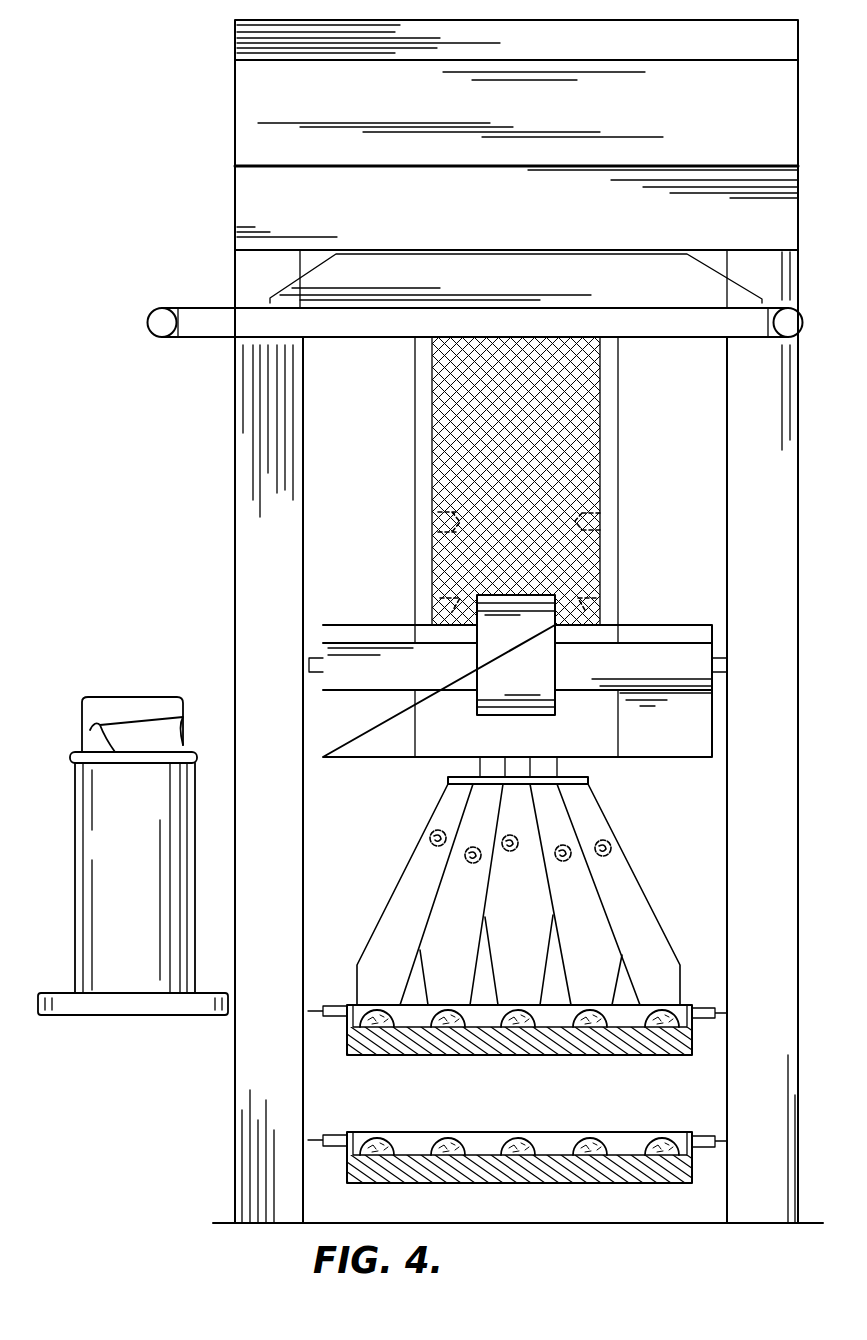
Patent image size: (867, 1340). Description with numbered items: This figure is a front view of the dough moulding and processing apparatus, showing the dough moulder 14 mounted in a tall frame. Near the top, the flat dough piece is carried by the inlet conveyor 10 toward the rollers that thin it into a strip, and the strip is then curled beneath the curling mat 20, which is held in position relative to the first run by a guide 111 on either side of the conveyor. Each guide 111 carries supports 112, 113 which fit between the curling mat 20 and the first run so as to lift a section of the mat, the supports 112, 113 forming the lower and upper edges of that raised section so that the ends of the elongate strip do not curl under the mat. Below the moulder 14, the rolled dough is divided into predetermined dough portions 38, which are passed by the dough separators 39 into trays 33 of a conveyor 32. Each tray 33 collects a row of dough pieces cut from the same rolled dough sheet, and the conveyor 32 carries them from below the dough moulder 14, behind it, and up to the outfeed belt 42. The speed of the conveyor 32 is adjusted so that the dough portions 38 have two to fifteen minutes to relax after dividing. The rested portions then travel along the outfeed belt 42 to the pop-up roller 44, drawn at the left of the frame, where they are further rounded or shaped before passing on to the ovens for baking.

The inlet conveyor 10 is at (507, 662).
The dough moulder 14 is at (394, 382).
The curling mat 20 is at (563, 407).
The conveyor 32 is at (597, 1103).
The tray 33 is at (518, 1045).
The dough portions 38 is at (467, 860).
The dough separators 39 is at (523, 945).
The outfeed belt 42 is at (225, 320).
The pop-up roller 44 is at (120, 834).
The guide 111 is at (425, 447).
The support 112 is at (430, 522).
The support 113 is at (433, 598).